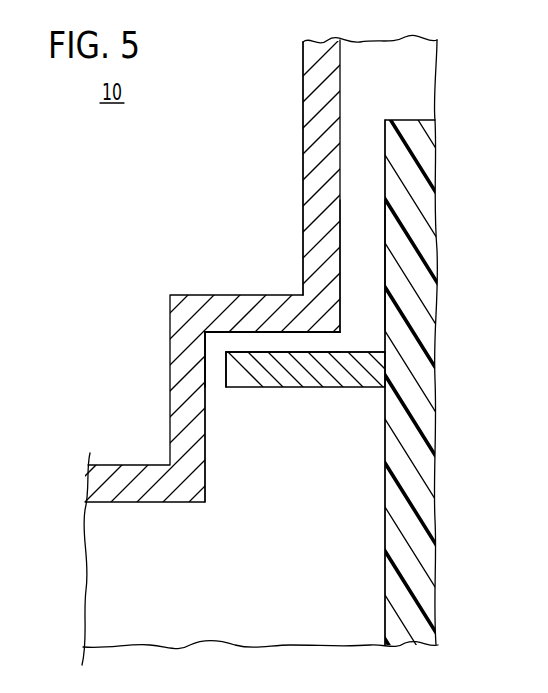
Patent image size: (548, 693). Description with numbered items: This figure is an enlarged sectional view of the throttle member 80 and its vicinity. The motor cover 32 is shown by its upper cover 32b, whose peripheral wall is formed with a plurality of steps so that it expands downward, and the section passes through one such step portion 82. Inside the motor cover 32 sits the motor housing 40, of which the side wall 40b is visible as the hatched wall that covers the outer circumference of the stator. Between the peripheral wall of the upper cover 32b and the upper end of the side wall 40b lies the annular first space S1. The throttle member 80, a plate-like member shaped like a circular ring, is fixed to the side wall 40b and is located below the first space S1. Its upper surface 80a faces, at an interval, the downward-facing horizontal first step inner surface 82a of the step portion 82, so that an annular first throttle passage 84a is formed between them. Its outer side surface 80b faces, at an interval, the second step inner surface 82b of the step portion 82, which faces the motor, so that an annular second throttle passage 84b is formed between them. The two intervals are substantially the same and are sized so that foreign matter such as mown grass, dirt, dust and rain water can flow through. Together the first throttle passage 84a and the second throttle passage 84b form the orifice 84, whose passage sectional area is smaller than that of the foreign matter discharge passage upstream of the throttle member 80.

The motor cover 32 is at (301, 60).
The upper cover 32b is at (302, 128).
The first space S1 is at (355, 213).
The motor housing 40 is at (404, 117).
The side wall 40b is at (413, 179).
The step portion 82 is at (169, 295).
The first step inner surface 82a is at (287, 333).
The second step inner surface 82b is at (206, 438).
The throttle member 80 is at (333, 377).
The upper surface 80a is at (348, 352).
The outer side surface 80b is at (232, 375).
The orifice 84 is at (96, 323).
The first throttle passage 84a is at (240, 340).
The second throttle passage 84b is at (215, 368).